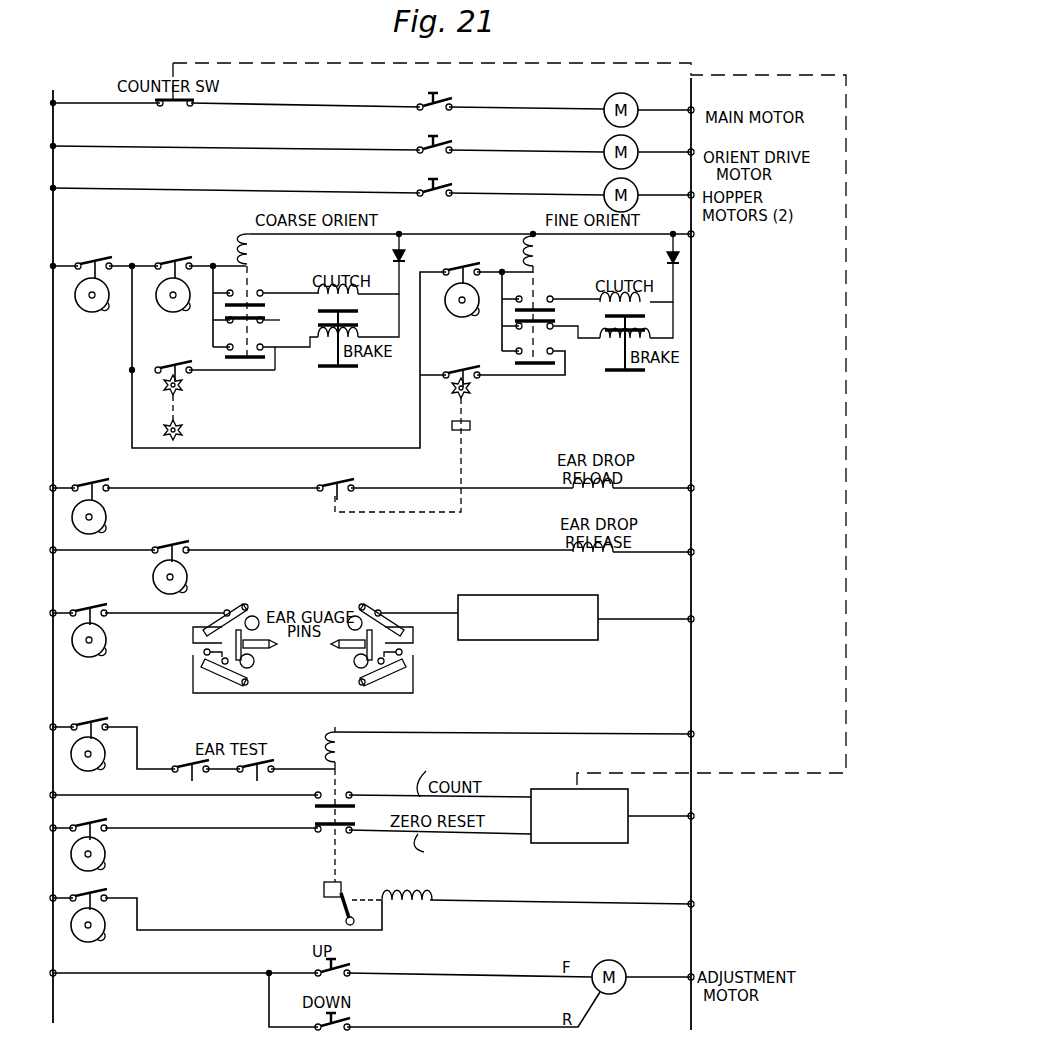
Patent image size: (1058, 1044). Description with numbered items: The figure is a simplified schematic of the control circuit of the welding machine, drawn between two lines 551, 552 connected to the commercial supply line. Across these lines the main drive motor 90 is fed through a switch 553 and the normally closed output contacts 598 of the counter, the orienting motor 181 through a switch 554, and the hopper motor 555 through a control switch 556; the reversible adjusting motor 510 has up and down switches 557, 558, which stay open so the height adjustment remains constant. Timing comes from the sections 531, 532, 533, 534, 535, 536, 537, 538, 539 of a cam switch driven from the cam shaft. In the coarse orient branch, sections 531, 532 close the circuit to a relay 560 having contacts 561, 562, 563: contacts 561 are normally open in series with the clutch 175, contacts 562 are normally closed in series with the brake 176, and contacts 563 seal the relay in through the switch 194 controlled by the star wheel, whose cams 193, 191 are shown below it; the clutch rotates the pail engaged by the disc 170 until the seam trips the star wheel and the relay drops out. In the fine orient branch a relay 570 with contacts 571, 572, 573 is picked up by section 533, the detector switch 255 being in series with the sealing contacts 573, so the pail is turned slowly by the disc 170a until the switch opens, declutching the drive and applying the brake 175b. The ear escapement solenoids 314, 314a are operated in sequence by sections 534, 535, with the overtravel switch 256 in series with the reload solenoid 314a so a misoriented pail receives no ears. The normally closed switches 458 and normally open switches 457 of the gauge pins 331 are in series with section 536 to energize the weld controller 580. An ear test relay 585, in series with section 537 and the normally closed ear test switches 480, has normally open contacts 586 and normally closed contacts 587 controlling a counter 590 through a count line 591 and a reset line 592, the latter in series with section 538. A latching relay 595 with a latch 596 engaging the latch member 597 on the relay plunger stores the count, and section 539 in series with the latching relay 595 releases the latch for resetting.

The supply line 551 is at (53, 90).
The supply line 552 is at (691, 90).
The output contacts 598 is at (179, 105).
The switch 553 is at (455, 106).
The switch 554 is at (455, 146).
The control switch 556 is at (455, 189).
The main drive motor 90 is at (634, 100).
The orienting motor 181 is at (636, 144).
The motor 555 is at (632, 188).
The coarse orient relay 560 is at (244, 250).
The contacts 561 is at (258, 292).
The contacts 562 is at (269, 320).
The contacts 563 is at (256, 348).
The clutch 175 is at (399, 309).
The brake 176 is at (328, 340).
The disc 170 is at (338, 368).
The cam switch section 531 is at (92, 312).
The cam switch section 532 is at (170, 312).
The cam switch section 533 is at (460, 317).
The cam switch section 534 is at (106, 517).
The cam switch section 535 is at (188, 577).
The cam switch section 536 is at (96, 656).
The cam switch section 537 is at (100, 768).
The cam switch section 538 is at (105, 854).
The cam switch section 539 is at (96, 942).
The switch 194 is at (174, 361).
The cam 193 is at (183, 390).
The cam 191 is at (183, 430).
The fine orient relay 570 is at (530, 254).
The contacts 571 is at (544, 296).
The contacts 572 is at (554, 325).
The contacts 573 is at (560, 362).
The switch 255 is at (474, 366).
The fine orient brake coil 175b is at (620, 348).
The disc 170a is at (644, 372).
The overtravel switch 256 is at (343, 486).
The reload solenoid 314a is at (612, 488).
The solenoid 314 is at (612, 552).
The switches 458 is at (248, 604).
The switches 457 is at (250, 682).
The gauge pins 331 is at (277, 648).
The weld controller 580 is at (518, 640).
The ear test relay 585 is at (346, 748).
The contacts 586 is at (352, 790).
The count line 591 is at (441, 773).
The reset line 592 is at (439, 852).
The ear test switches 480 is at (192, 774).
The contacts 587 is at (352, 833).
The counter 590 is at (553, 843).
The latch member 597 is at (322, 890).
The latch 596 is at (341, 916).
The latching relay 595 is at (410, 905).
The up switch 557 is at (348, 965).
The down switch 558 is at (351, 1019).
The adjusting motor 510 is at (612, 994).